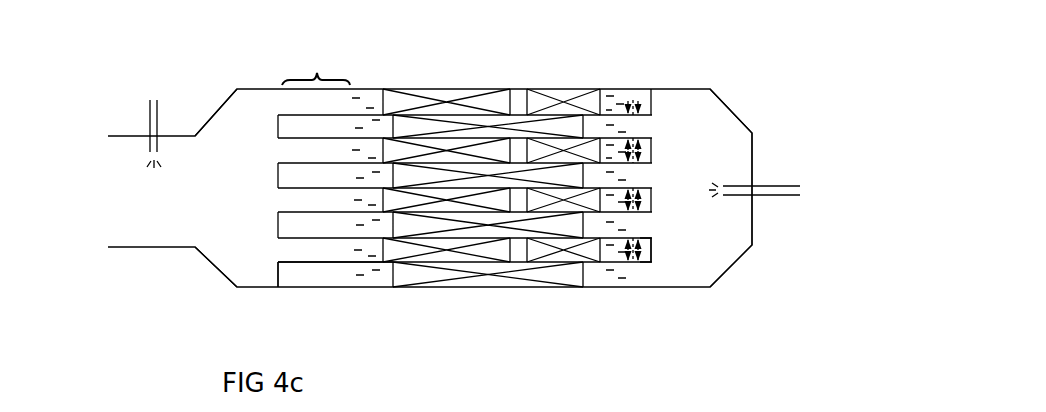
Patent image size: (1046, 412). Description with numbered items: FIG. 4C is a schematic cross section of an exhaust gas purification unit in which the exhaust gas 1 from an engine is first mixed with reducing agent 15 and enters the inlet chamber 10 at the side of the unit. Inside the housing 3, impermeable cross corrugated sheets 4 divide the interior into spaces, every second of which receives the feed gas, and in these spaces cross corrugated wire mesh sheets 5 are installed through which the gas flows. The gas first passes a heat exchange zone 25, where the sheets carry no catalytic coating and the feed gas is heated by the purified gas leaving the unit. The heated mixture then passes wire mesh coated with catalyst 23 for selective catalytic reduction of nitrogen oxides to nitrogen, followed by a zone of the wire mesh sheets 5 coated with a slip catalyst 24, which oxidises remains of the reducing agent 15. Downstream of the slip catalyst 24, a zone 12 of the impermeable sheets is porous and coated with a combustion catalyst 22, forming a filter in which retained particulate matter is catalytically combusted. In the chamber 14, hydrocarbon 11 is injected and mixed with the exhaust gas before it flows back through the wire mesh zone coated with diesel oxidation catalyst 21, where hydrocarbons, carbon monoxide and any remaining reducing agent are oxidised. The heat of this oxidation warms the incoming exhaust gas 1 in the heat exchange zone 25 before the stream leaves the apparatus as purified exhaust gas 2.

The exhaust gas 1 is at (128, 193).
The purified exhaust gas 2 is at (299, 275).
The housing 3 is at (722, 95).
The impermeable cross corrugated sheets 4 is at (335, 264).
The cross corrugated wire mesh sheets 5 is at (369, 103).
The inlet chamber 10 is at (225, 123).
The hydrocarbon 11 is at (773, 190).
The porous zone of the impermeable sheets 12 is at (631, 107).
The chamber 14 is at (715, 140).
The reducing agent 15 is at (153, 97).
The diesel oxidation catalyst 21 is at (470, 284).
The combustion catalyst 22 is at (648, 265).
The catalyst for selective catalytic reduction 23 is at (457, 96).
The slip catalyst 24 is at (565, 96).
The heat exchange zone 25 is at (465, 161).